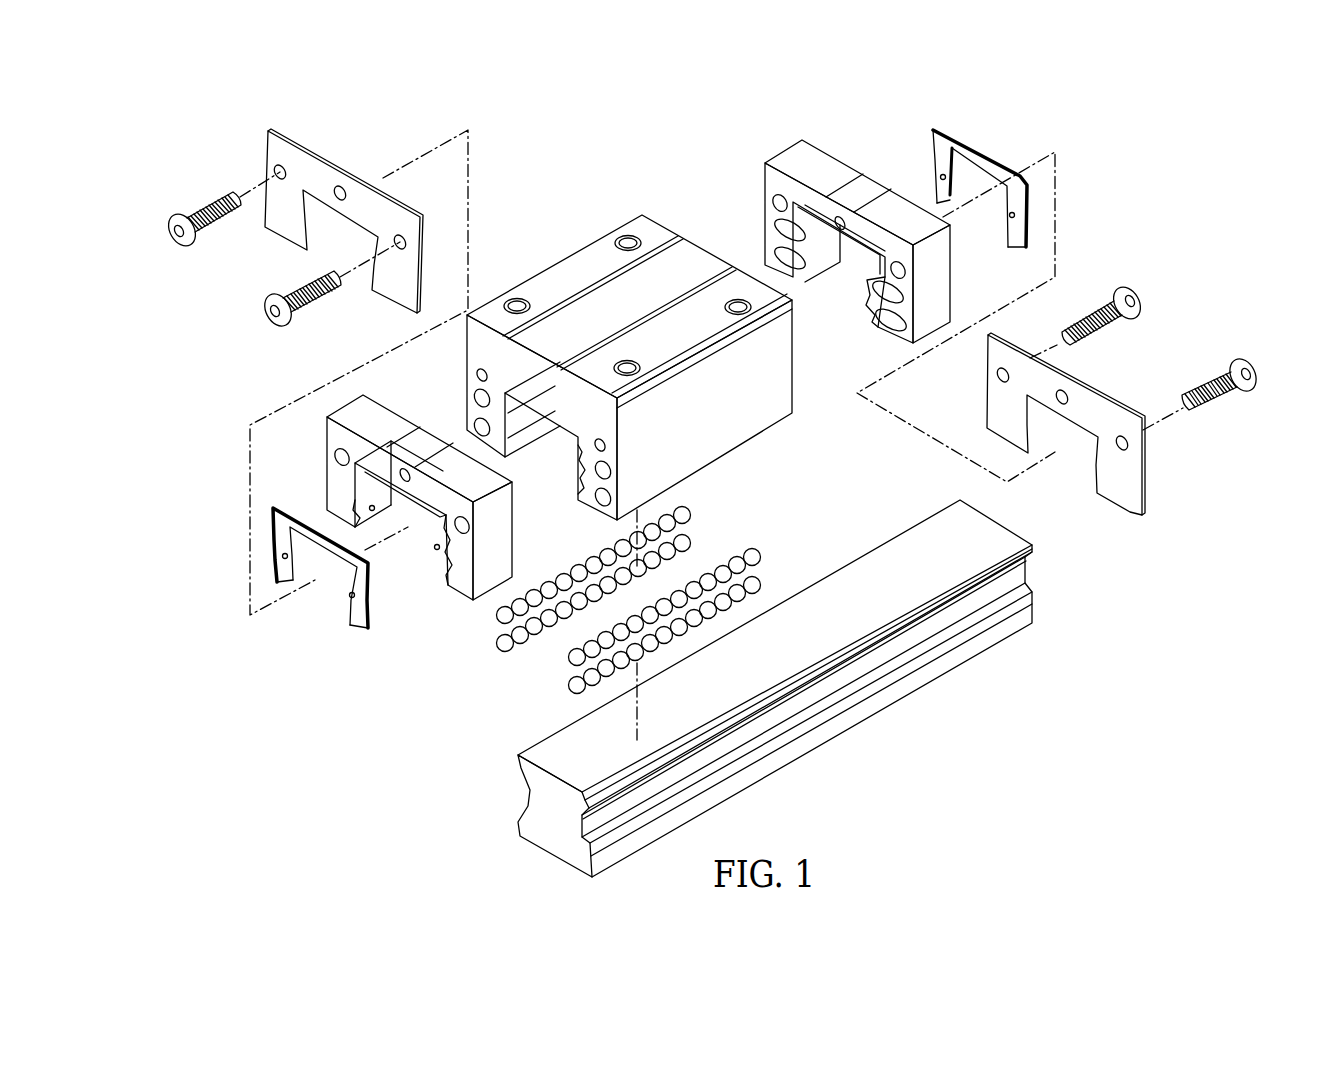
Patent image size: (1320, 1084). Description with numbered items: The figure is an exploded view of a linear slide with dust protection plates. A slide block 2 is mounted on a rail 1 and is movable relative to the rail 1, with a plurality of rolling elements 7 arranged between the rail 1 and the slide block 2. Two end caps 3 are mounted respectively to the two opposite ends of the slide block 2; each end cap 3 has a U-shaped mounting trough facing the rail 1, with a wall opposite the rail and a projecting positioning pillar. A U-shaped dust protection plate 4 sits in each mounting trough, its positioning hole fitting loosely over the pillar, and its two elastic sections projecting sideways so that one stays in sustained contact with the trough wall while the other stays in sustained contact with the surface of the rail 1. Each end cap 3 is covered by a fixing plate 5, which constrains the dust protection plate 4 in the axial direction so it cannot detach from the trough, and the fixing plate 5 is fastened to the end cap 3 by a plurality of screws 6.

The rail 1 is at (553, 833).
The slide block 2 is at (580, 258).
The end cap 3 is at (468, 573).
The dust protection plate 4 is at (350, 618).
The fixing plate 5 is at (272, 153).
The screw 6 is at (193, 246).
The rolling element 7 is at (577, 658).